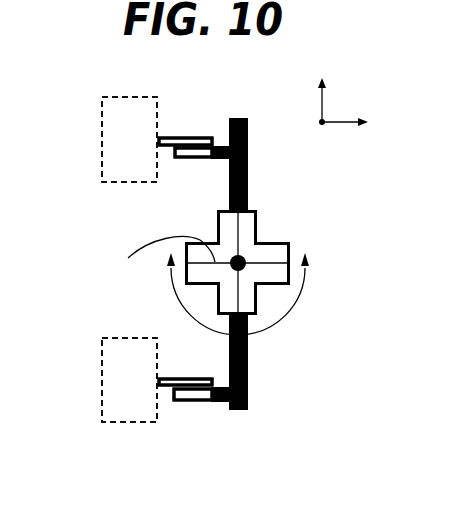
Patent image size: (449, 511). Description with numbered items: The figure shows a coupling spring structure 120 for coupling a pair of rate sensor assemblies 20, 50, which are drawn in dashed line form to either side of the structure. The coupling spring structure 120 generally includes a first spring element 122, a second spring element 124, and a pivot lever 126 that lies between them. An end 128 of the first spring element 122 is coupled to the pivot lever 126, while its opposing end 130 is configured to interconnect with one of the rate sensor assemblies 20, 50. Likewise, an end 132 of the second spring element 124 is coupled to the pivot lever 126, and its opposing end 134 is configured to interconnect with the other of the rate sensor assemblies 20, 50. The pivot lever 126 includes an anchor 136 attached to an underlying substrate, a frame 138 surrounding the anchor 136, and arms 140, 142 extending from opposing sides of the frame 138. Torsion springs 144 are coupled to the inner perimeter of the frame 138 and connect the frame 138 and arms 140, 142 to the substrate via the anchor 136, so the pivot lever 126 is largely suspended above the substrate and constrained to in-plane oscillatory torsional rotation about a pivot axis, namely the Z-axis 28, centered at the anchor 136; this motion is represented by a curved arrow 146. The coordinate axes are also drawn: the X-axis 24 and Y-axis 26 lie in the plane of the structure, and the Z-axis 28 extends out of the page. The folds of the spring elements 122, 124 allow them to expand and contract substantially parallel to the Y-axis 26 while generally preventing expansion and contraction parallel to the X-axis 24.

The rate sensor assembly 20 is at (102, 105).
The rate sensor assembly 50 is at (129, 259).
The X-axis 24 is at (337, 124).
The Y-axis 26 is at (323, 100).
The Z-axis 28 is at (320, 121).
The coupling spring structure 120 is at (258, 486).
The first spring element 122 is at (182, 162).
The second spring element 124 is at (182, 402).
The pivot lever 126 is at (232, 118).
The end of first spring element 128 is at (179, 160).
The opposing end of first spring element 130 is at (161, 136).
The end of second spring element 132 is at (225, 403).
The opposing end of second spring element 134 is at (161, 378).
The anchor 136 is at (244, 261).
The frame 138 is at (154, 255).
The arm 140 is at (250, 130).
The arm 142 is at (248, 385).
The torsion springs 144 is at (238, 228).
The curved arrow 146 is at (268, 323).